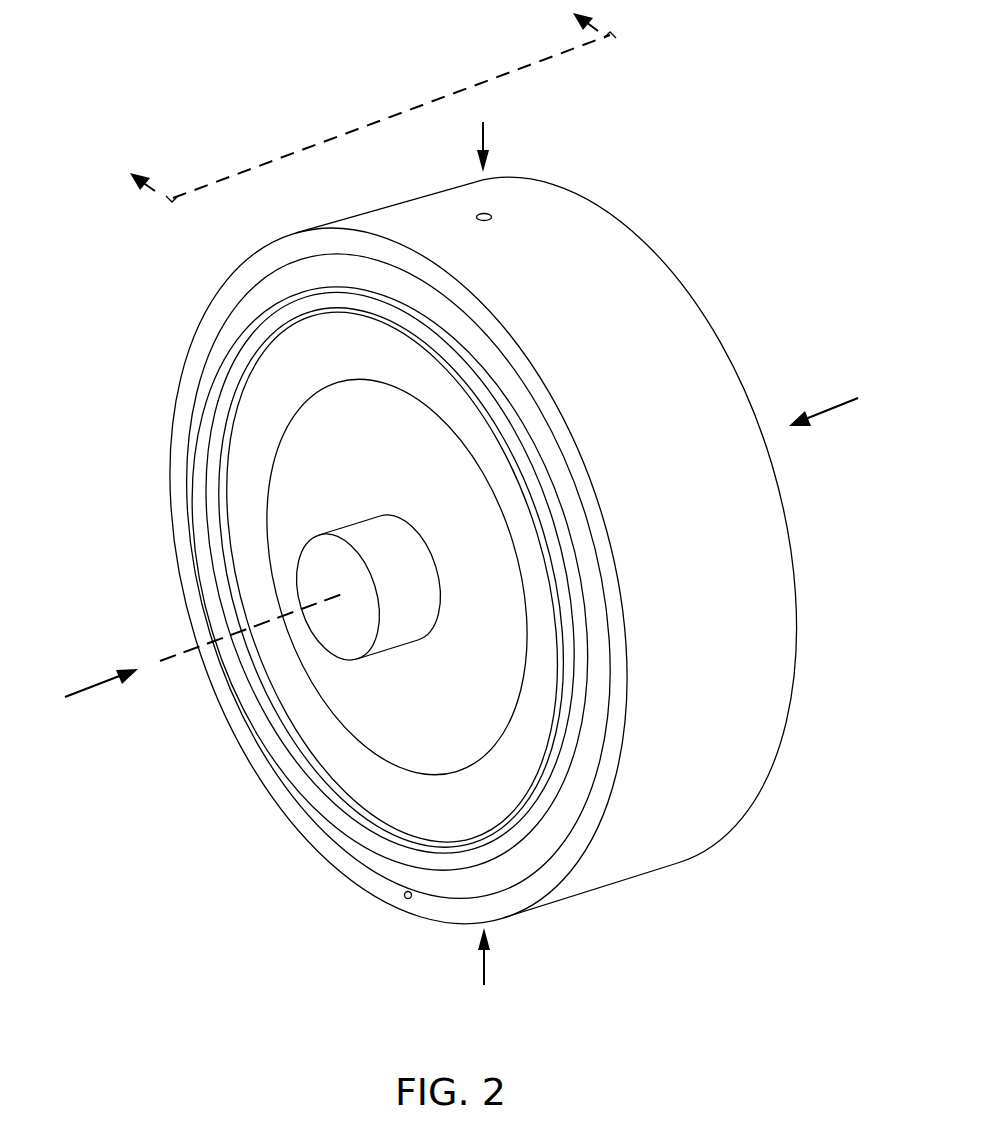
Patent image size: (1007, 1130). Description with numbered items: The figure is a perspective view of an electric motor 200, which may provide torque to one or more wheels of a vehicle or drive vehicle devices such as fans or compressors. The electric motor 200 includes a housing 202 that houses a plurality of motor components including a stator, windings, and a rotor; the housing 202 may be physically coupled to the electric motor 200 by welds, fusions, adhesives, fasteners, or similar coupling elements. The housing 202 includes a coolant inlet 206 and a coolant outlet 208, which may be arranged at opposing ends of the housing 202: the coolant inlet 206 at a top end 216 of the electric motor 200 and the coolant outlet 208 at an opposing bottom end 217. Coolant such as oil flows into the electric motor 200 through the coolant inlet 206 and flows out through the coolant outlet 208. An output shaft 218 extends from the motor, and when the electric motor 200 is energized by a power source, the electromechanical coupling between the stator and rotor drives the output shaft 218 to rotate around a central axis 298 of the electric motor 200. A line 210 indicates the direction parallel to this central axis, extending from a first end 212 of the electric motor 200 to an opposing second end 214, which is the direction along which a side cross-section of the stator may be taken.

The electric motor 200 is at (685, 165).
The housing 202 is at (543, 218).
The coolant inlet 206 is at (483, 213).
The coolant outlet 208 is at (406, 900).
The line 210 is at (258, 166).
The first end 212 is at (102, 682).
The second end 214 is at (843, 405).
The top end 216 is at (487, 140).
The bottom end 217 is at (488, 961).
The output shaft 218 is at (392, 610).
The central axis 298 is at (170, 658).